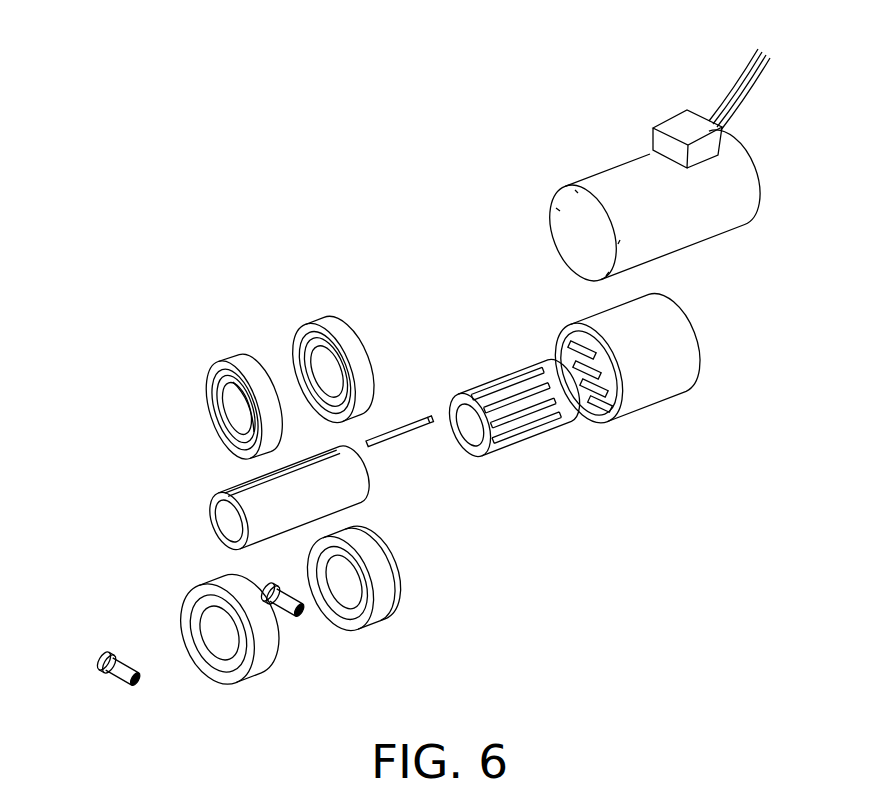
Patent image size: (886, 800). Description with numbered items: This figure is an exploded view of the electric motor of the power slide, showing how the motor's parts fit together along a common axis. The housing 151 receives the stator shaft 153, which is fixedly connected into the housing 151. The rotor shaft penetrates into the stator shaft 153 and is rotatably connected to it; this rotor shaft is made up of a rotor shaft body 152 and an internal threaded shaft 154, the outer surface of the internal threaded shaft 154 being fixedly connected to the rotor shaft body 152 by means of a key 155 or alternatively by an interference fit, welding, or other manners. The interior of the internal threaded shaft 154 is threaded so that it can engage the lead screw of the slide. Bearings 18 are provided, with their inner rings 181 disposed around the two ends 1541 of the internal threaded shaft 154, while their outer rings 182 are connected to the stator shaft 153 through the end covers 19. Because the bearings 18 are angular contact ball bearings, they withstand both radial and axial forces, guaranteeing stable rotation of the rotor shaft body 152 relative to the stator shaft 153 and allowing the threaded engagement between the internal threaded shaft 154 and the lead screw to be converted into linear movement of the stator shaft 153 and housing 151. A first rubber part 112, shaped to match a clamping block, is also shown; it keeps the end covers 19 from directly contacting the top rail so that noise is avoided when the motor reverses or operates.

The housing 151 is at (632, 187).
The rotor shaft body 152 is at (518, 433).
The stator shaft 153 is at (655, 335).
The internal threaded shaft 154 is at (299, 503).
The two ends of the inner threaded shaft 1541 is at (352, 478).
The key 155 is at (396, 440).
The bearings 18 is at (213, 382).
The inner rings 181 is at (232, 412).
The outer rings 182 is at (258, 370).
The end covers 19 is at (195, 602).
The first rubber part 112 is at (110, 652).